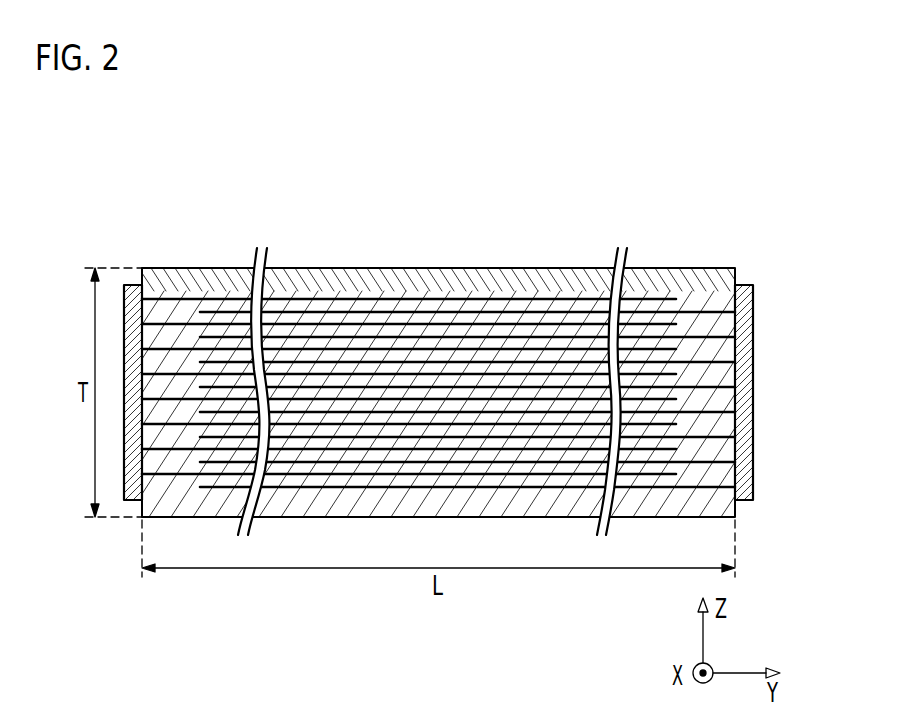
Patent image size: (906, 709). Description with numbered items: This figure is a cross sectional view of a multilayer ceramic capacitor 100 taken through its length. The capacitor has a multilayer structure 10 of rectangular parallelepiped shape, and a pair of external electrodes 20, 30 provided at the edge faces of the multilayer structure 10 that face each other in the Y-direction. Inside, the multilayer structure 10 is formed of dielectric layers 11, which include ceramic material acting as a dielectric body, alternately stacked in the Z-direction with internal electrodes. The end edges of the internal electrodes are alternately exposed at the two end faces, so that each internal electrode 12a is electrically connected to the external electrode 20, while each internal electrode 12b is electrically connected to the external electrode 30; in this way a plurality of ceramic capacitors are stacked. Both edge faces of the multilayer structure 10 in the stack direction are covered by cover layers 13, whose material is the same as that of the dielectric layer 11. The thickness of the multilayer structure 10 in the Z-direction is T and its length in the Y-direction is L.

The multilayer ceramic capacitor 100 is at (448, 331).
The multilayer structure 10 is at (438, 376).
The dielectric layer 11 is at (552, 320).
The internal electrode 12a is at (311, 323).
The internal electrode 12b is at (392, 337).
The cover layer 13 is at (457, 285).
The external electrode 20 is at (131, 284).
The external electrode 30 is at (745, 285).